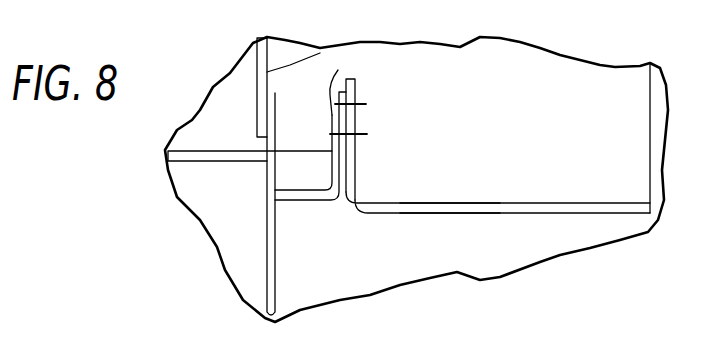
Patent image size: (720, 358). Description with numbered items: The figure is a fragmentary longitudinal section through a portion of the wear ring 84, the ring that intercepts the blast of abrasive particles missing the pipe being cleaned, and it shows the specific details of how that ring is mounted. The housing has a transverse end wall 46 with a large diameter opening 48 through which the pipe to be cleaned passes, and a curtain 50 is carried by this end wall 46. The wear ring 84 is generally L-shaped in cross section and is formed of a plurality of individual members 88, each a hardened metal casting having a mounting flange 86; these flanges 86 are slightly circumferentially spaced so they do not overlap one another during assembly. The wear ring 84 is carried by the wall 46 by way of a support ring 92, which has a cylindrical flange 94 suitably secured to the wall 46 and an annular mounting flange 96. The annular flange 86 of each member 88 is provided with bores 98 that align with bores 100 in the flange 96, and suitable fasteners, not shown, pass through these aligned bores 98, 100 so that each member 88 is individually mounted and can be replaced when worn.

The transverse end wall 46 is at (266, 187).
The large diameter opening 48 is at (320, 51).
The curtain 50 is at (270, 43).
The wear ring 84 is at (453, 213).
The mounting flange 86 is at (353, 128).
The individual members 88 is at (528, 214).
The support ring 92 is at (312, 202).
The cylindrical flange 94 is at (340, 201).
The annular mounting flange 96 is at (340, 122).
The bores 98 is at (352, 104).
The bores 100 is at (311, 170).